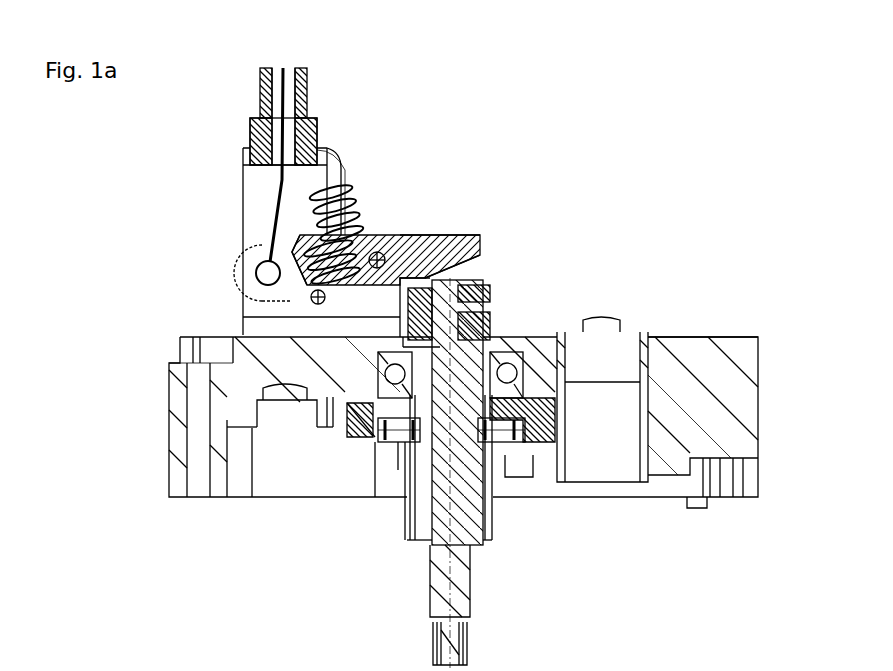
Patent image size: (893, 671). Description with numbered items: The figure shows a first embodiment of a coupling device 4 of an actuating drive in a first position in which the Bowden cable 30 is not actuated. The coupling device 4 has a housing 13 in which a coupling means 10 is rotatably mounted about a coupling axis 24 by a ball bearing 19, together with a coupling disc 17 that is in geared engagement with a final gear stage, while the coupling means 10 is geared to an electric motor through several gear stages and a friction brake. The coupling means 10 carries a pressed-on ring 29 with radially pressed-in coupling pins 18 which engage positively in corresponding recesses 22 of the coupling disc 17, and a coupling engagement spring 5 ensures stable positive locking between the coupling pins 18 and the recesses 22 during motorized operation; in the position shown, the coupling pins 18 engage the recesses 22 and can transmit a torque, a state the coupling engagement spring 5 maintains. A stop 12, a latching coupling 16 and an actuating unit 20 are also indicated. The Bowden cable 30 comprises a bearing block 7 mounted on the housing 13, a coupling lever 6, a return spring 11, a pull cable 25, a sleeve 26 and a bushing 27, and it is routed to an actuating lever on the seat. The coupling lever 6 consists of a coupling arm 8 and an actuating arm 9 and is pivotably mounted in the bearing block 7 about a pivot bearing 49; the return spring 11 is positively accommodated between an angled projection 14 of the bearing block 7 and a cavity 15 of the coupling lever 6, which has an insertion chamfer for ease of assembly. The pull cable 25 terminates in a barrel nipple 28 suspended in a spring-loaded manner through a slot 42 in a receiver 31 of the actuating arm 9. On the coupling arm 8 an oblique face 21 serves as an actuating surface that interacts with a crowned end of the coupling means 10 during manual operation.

The coupling device 4 is at (546, 145).
The coupling engagement spring 5 is at (472, 313).
The coupling lever 6 is at (428, 228).
The bearing block 7 is at (332, 140).
The coupling arm 8 is at (450, 240).
The actuating arm 9 is at (280, 251).
The coupling means 10 is at (470, 513).
The return spring 11 is at (360, 202).
The stop 12 is at (312, 300).
The housing 13 is at (707, 350).
The projection 14 is at (347, 190).
The cavity 15 is at (305, 262).
The latching coupling 16 is at (355, 455).
The coupling disc 17 is at (507, 408).
The coupling pin 18 is at (402, 437).
The ball bearing 19 is at (509, 372).
The actuating unit 20 is at (225, 138).
The oblique face 21 is at (467, 260).
The recess 22 is at (381, 437).
The coupling axis 24 is at (453, 552).
The pull cable 25 is at (280, 84).
The sleeve 26 is at (262, 70).
The bushing 27 is at (242, 147).
The barrel nipple 28 is at (262, 273).
The ring 29 is at (493, 442).
The Bowden cable 30 is at (307, 64).
The receiver 31 is at (245, 286).
The slot 42 is at (243, 258).
The pivot bearing 49 is at (382, 246).